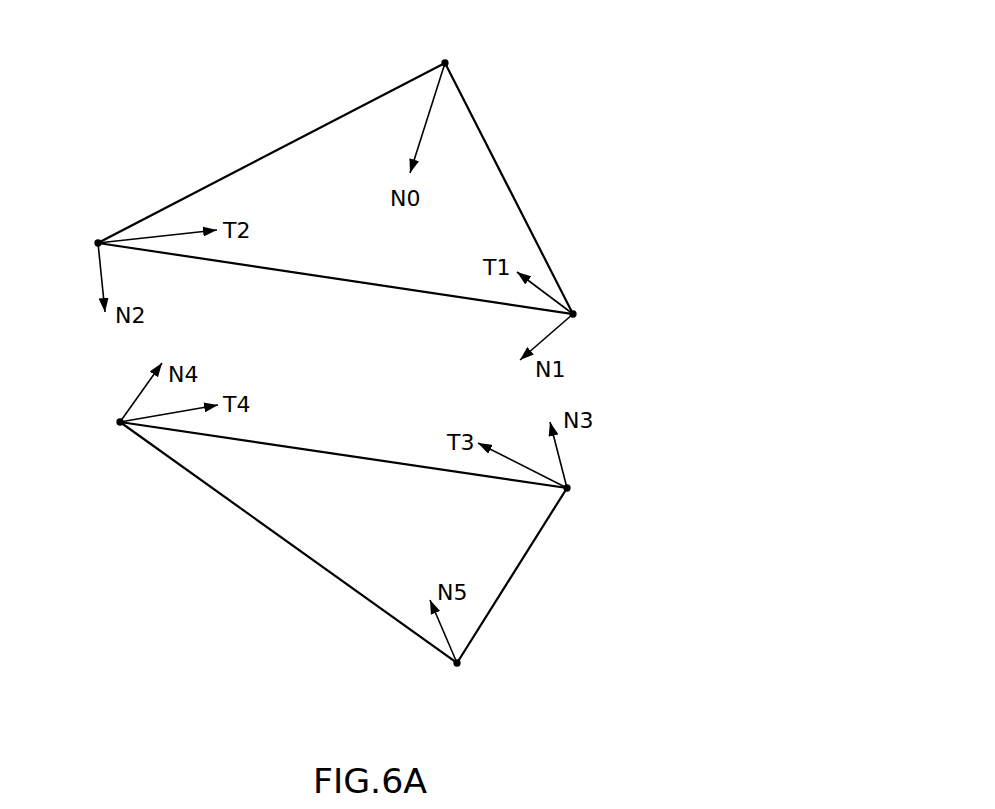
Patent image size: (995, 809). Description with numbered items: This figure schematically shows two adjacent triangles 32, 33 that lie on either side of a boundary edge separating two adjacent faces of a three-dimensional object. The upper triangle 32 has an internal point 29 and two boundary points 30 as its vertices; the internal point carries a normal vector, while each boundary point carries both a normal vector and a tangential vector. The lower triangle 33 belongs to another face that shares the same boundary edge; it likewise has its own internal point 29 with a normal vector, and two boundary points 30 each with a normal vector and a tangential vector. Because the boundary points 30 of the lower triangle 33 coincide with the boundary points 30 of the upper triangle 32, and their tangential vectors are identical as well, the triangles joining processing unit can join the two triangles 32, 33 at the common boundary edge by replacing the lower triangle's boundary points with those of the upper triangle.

The internal point 29 is at (445, 62).
The boundary point 30 is at (98, 243).
The triangle 32 is at (238, 128).
The triangle 33 is at (253, 556).